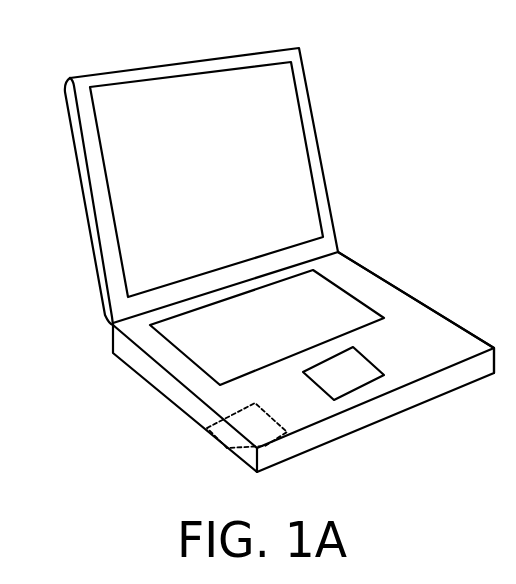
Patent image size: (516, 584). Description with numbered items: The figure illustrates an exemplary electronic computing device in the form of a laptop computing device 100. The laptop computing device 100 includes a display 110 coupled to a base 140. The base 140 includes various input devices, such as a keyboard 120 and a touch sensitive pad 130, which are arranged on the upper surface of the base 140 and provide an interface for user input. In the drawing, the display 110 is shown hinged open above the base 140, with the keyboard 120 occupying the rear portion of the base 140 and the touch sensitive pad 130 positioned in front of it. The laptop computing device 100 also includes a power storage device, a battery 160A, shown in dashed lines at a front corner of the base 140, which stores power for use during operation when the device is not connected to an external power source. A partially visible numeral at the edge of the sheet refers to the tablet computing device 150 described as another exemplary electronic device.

The portable computing device 100 is at (68, 54).
The display 110 is at (135, 114).
The keyboard 120 is at (205, 337).
The trackpad 130 is at (364, 355).
The base housing 140 is at (444, 315).
The lid 150 is at (506, 20).
The antenna region 160A is at (213, 432).